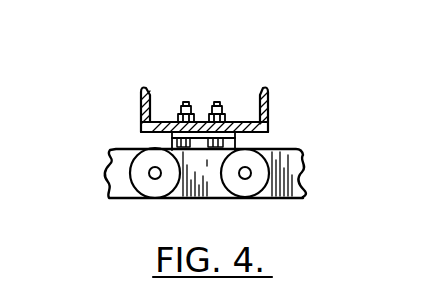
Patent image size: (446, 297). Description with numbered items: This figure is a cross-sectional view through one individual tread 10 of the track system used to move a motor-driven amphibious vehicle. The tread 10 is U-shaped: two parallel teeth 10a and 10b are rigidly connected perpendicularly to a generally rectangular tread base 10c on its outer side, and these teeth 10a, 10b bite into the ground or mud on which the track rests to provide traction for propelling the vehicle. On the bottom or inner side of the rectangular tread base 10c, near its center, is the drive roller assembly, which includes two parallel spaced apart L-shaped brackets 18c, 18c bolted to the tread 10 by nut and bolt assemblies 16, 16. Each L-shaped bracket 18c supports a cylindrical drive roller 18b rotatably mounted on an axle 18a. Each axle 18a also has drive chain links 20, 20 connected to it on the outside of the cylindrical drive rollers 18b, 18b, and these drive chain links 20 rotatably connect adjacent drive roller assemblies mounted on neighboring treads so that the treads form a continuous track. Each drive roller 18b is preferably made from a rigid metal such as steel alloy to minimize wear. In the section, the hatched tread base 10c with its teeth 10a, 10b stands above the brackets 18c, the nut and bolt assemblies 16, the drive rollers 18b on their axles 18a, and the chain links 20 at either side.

The tread 10 is at (198, 80).
The tooth 10a is at (141, 106).
The tooth 10b is at (268, 96).
The tread base 10c is at (161, 121).
The nut and bolt assemblies 16 is at (218, 100).
The axle 18a is at (155, 179).
The drive roller 18b is at (112, 172).
The L-shaped bracket 18c is at (185, 199).
The drive chain link 20 is at (134, 148).